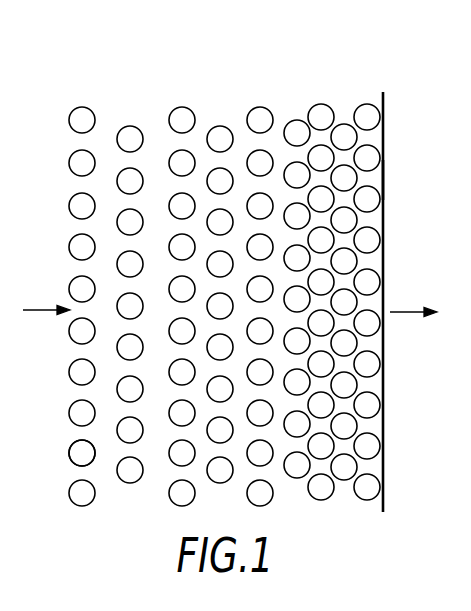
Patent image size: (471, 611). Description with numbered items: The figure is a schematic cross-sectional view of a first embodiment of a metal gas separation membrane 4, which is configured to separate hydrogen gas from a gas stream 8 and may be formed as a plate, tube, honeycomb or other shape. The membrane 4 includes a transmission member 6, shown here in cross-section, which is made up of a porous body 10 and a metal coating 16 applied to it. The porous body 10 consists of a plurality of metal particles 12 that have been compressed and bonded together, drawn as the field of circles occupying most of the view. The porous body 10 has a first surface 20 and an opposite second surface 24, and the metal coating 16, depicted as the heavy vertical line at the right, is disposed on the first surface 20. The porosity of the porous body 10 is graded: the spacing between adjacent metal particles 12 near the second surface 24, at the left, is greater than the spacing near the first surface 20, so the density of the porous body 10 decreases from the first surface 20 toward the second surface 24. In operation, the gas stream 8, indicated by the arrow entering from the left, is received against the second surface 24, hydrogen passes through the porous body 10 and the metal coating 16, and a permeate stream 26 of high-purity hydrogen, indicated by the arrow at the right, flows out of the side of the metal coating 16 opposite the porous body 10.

The metal gas separation membrane 4 is at (194, 63).
The transmission member 6 is at (281, 93).
The gas stream 8 is at (36, 309).
The porous body 10 is at (153, 142).
The metal particles 12 is at (124, 126).
The metal coating 16 is at (385, 138).
The first surface 20 is at (377, 183).
The second surface 24 is at (80, 432).
The permeate stream 26 is at (403, 312).